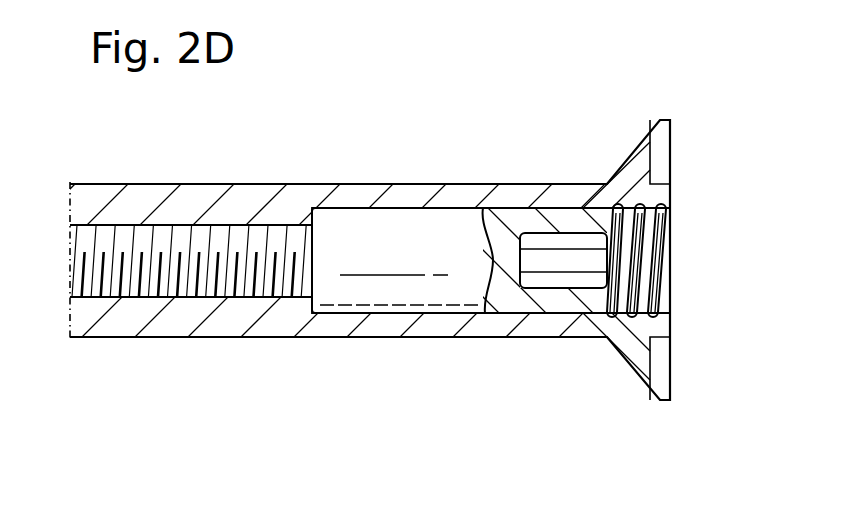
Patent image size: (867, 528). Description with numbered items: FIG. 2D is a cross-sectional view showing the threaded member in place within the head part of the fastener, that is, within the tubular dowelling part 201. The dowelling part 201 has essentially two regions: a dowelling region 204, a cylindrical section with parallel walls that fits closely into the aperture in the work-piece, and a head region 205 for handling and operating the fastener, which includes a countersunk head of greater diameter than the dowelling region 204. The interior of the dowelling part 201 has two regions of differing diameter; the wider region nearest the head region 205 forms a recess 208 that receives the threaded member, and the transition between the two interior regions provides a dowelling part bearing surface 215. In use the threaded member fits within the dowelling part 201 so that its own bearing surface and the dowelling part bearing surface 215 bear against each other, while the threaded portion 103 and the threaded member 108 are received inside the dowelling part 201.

The dowelling part 201 is at (670, 102).
The dowelling region 204 is at (70, 160).
The threaded bore 103 is at (138, 297).
The dowelling part bearing surface 215 is at (310, 303).
The insert 108 is at (312, 364).
The head region 205 is at (670, 404).
The recess 208 is at (312, 452).